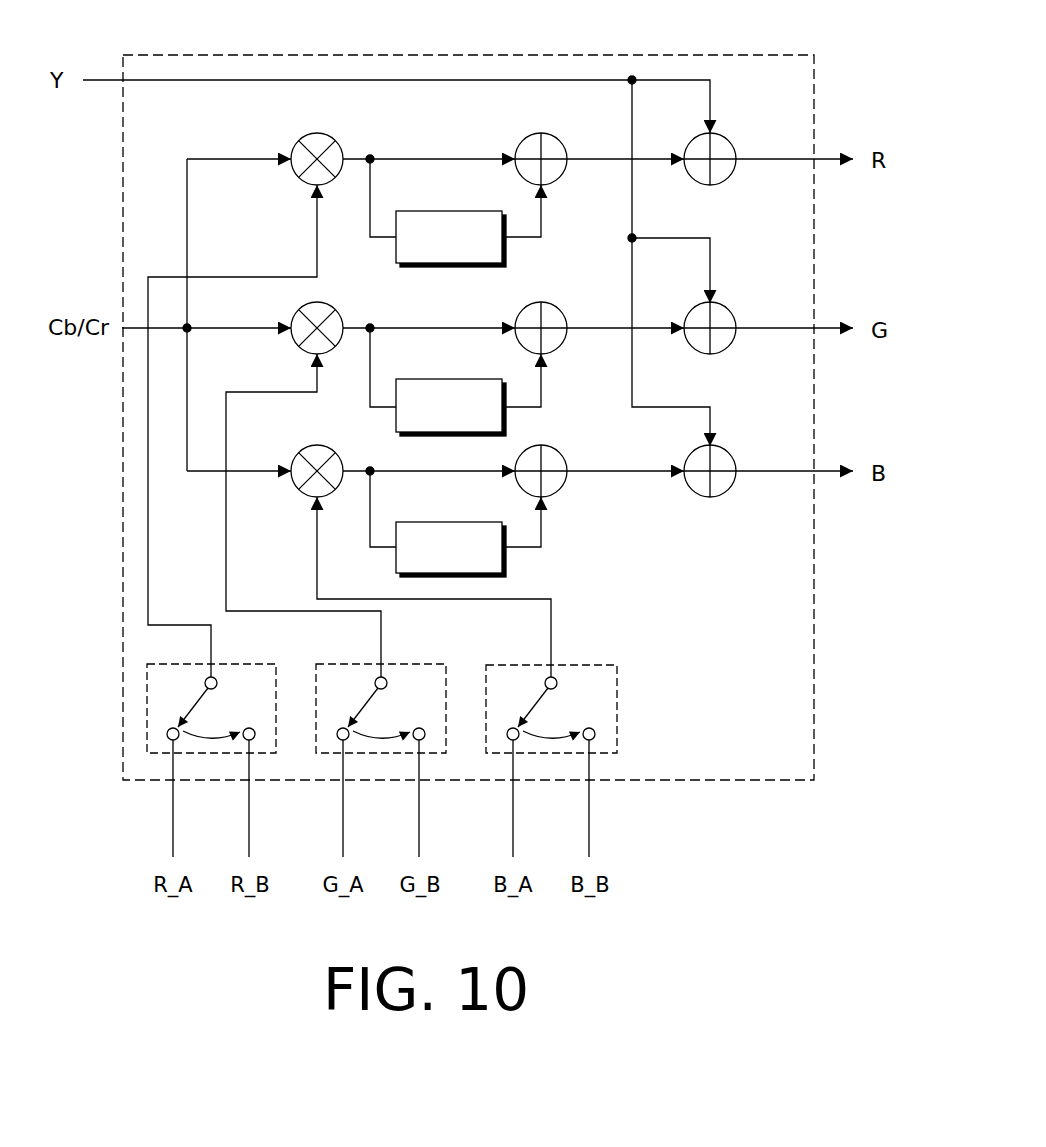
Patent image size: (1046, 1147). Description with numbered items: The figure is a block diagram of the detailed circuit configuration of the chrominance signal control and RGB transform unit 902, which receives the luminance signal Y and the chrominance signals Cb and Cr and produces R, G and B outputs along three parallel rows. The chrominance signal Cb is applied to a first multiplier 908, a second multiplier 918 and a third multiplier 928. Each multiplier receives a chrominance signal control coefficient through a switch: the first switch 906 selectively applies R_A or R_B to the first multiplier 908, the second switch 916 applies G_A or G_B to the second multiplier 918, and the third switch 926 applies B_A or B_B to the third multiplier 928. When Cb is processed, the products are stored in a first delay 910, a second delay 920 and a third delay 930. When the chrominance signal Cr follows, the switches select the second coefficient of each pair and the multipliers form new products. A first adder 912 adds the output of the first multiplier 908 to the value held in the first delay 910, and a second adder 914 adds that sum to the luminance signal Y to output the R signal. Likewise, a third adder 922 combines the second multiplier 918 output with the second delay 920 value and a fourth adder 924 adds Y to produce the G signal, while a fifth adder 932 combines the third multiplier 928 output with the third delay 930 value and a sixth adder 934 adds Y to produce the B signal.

The chrominance signal control and RGB transform unit 902 is at (552, 55).
The first switch 906 is at (228, 664).
The first multiplier 908 is at (334, 139).
The first delay 910 is at (425, 211).
The first adder 912 is at (558, 139).
The second adder 914 is at (727, 139).
The second switch 916 is at (398, 664).
The second multiplier 918 is at (334, 308).
The second delay 920 is at (425, 379).
The third adder 922 is at (558, 308).
The fourth adder 924 is at (727, 308).
The third switch 926 is at (617, 715).
The third multiplier 928 is at (300, 452).
The third delay 930 is at (425, 522).
The fifth adder 932 is at (558, 451).
The sixth adder 934 is at (727, 451).